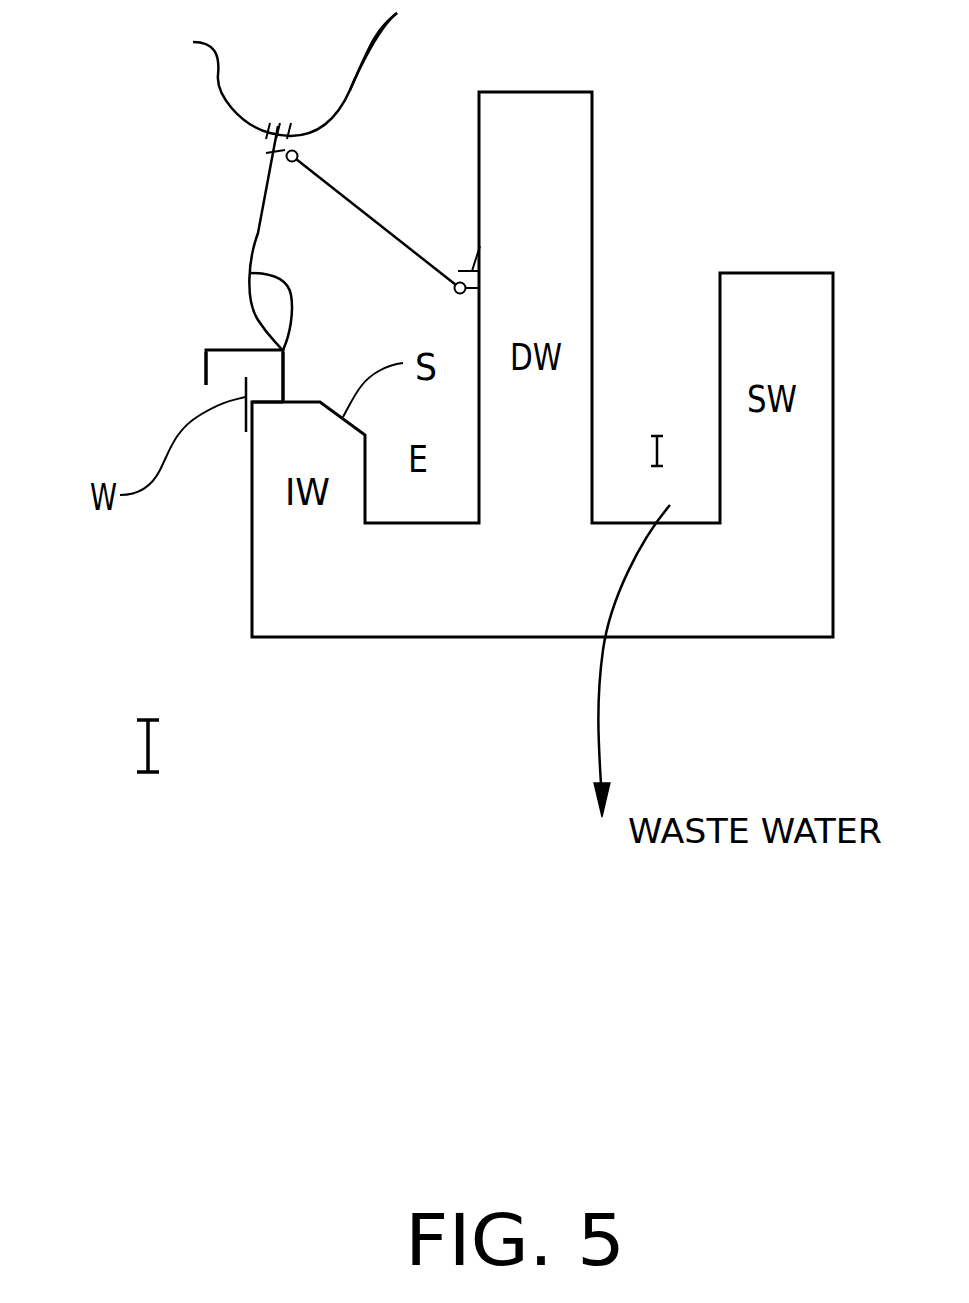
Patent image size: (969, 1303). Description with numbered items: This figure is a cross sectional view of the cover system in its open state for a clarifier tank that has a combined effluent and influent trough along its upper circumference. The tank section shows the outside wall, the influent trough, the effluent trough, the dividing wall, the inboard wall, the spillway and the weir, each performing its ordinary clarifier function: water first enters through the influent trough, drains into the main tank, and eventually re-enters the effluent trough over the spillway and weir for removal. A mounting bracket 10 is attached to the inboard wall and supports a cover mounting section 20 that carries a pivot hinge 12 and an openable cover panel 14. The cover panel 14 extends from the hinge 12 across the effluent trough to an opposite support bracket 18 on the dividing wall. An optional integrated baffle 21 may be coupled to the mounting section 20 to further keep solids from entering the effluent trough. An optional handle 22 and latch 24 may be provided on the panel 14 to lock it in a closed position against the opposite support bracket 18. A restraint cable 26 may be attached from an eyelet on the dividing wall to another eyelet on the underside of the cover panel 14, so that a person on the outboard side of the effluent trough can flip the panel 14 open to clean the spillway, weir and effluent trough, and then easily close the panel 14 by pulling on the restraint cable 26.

The mounting bracket 10 is at (283, 377).
The pivot hinge 12 is at (250, 273).
The cover panel 14 is at (258, 232).
The opposite support bracket 18 is at (480, 246).
The cover mounting section 20 is at (218, 350).
The integrated baffle 21 is at (206, 363).
The handle 22 is at (265, 83).
The latch 24 is at (400, 45).
The restraint cable 26 is at (387, 230).